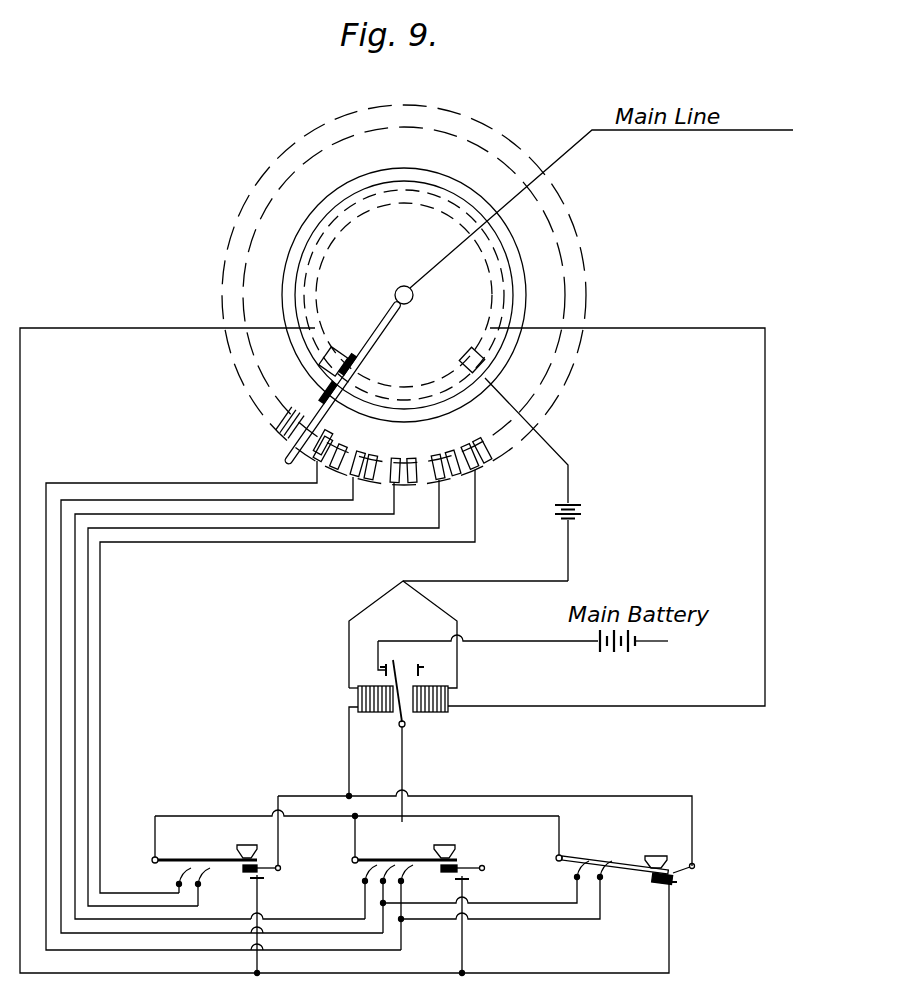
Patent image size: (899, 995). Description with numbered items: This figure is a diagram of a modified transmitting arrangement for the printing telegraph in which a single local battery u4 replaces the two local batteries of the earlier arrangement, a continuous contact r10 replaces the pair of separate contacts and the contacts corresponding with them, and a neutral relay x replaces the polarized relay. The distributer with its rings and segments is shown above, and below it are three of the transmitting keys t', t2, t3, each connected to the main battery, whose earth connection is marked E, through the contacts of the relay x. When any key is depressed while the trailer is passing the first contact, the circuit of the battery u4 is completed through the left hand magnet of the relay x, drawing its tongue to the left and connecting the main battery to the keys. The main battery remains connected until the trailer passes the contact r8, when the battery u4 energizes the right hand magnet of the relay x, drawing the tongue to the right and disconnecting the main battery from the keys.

The contact r8 is at (470, 353).
The continuous contact r10 is at (427, 413).
The local battery u4 is at (578, 512).
The neutral relay x is at (473, 701).
The earth connection E is at (641, 647).
The transmitting key t' is at (216, 886).
The transmitting key t2 is at (476, 896).
The transmitting key t3 is at (625, 850).